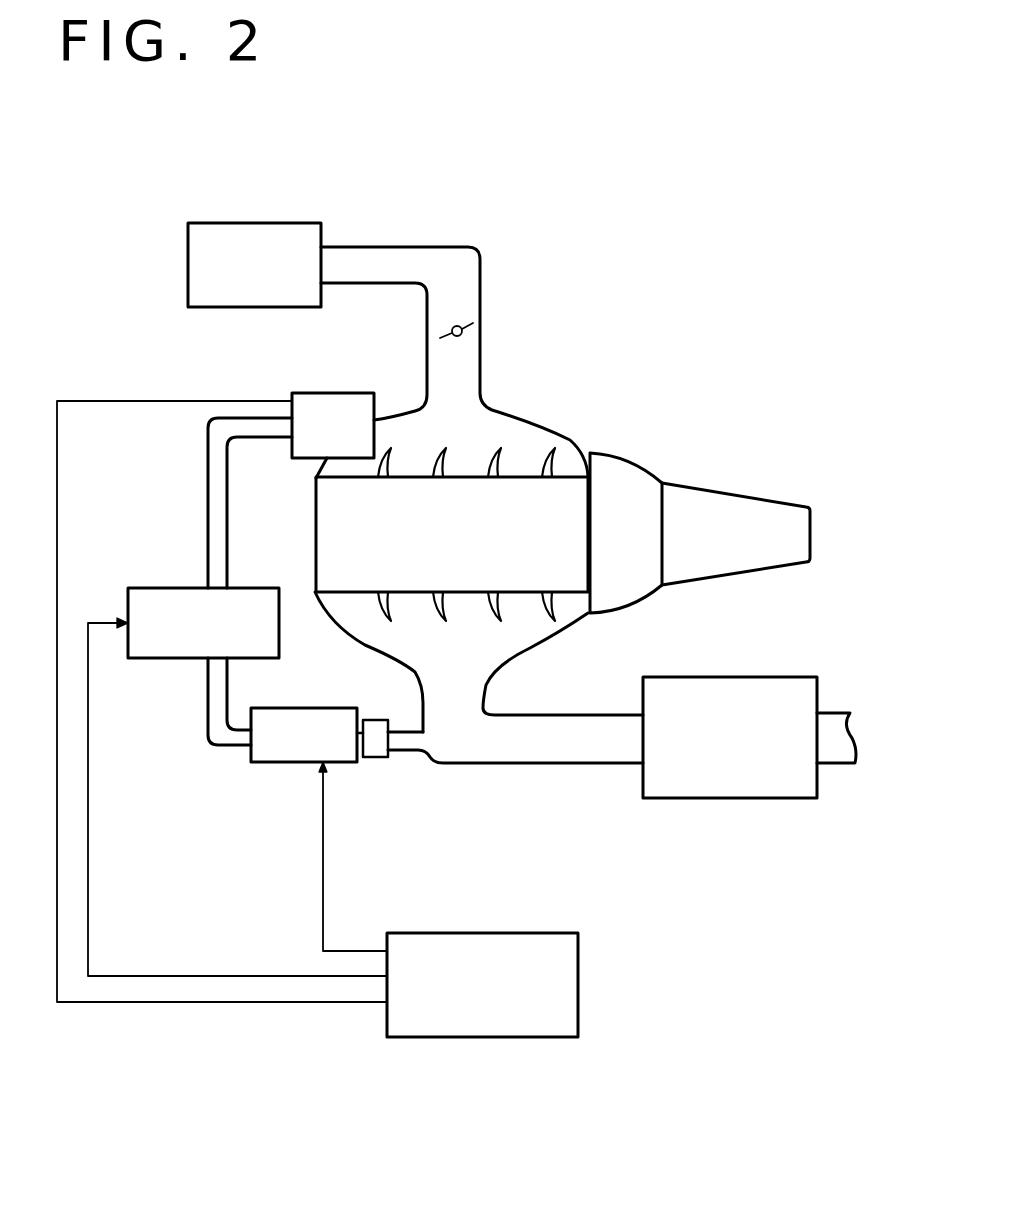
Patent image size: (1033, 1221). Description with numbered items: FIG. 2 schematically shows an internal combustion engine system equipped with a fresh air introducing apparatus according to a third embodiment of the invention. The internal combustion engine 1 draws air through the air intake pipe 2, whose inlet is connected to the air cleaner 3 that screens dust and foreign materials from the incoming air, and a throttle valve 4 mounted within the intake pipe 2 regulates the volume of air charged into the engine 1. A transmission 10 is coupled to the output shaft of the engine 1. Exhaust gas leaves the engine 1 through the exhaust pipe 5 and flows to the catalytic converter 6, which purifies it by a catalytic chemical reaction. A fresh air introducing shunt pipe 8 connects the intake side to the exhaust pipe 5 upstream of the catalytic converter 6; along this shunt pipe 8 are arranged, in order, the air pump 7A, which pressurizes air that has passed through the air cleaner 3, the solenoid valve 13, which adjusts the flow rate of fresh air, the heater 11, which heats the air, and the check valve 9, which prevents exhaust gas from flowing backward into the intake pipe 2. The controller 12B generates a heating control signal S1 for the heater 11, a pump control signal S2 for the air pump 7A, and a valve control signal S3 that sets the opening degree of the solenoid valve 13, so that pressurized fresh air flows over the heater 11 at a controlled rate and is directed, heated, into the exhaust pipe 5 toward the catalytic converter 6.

The internal combustion engine 1 is at (567, 495).
The air intake pipe 2 is at (468, 457).
The air cleaner 3 is at (243, 223).
The throttle valve 4 is at (482, 313).
The exhaust pipe 5 is at (552, 752).
The catalytic converter 6 is at (715, 682).
The air pump 7A is at (319, 391).
The fresh air introducing shunt pipe 8 is at (218, 553).
The check valve 9 is at (378, 757).
The transmission 10 is at (708, 505).
The heater 11 is at (317, 708).
The controller 12B is at (478, 932).
The solenoid valve 13 is at (150, 587).
The heating control signal S1 is at (323, 862).
The pump control signal S2 is at (167, 1003).
The valve control signal S3 is at (88, 877).